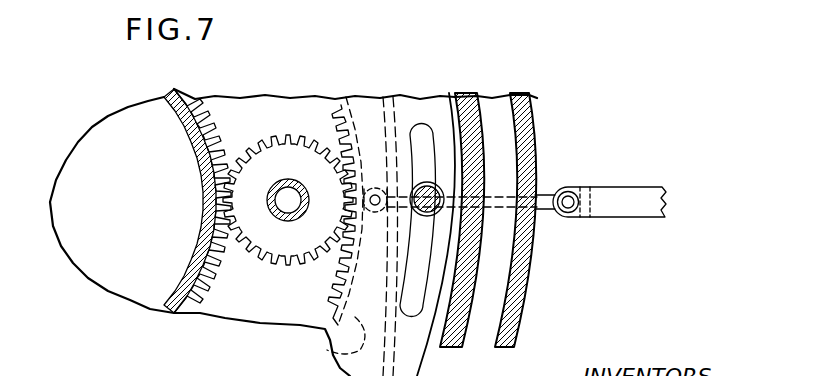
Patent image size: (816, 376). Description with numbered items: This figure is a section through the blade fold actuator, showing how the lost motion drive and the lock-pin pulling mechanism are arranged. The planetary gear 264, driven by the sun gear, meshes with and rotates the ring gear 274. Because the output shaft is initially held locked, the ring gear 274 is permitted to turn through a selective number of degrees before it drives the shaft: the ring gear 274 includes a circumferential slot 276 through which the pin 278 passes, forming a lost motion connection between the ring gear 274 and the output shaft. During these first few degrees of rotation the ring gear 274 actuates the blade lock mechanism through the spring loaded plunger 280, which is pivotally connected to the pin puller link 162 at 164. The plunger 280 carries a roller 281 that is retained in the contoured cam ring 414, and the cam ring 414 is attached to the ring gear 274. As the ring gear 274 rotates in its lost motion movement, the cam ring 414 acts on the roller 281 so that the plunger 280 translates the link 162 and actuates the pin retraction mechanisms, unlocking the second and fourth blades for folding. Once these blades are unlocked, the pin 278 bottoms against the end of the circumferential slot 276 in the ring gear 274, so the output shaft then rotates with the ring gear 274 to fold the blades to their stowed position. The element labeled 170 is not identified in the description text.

The planetary gear 264 is at (281, 150).
The ring gear 274 is at (393, 97).
The circumferential slot 276 is at (427, 183).
The pin 278 is at (450, 97).
The outer ring 170 is at (540, 108).
The spring loaded plunger 280 is at (547, 193).
The pivotal connection 164 is at (568, 213).
The pin puller link 162 is at (651, 213).
The roller 281 is at (352, 262).
The contoured cam ring 414 is at (335, 350).